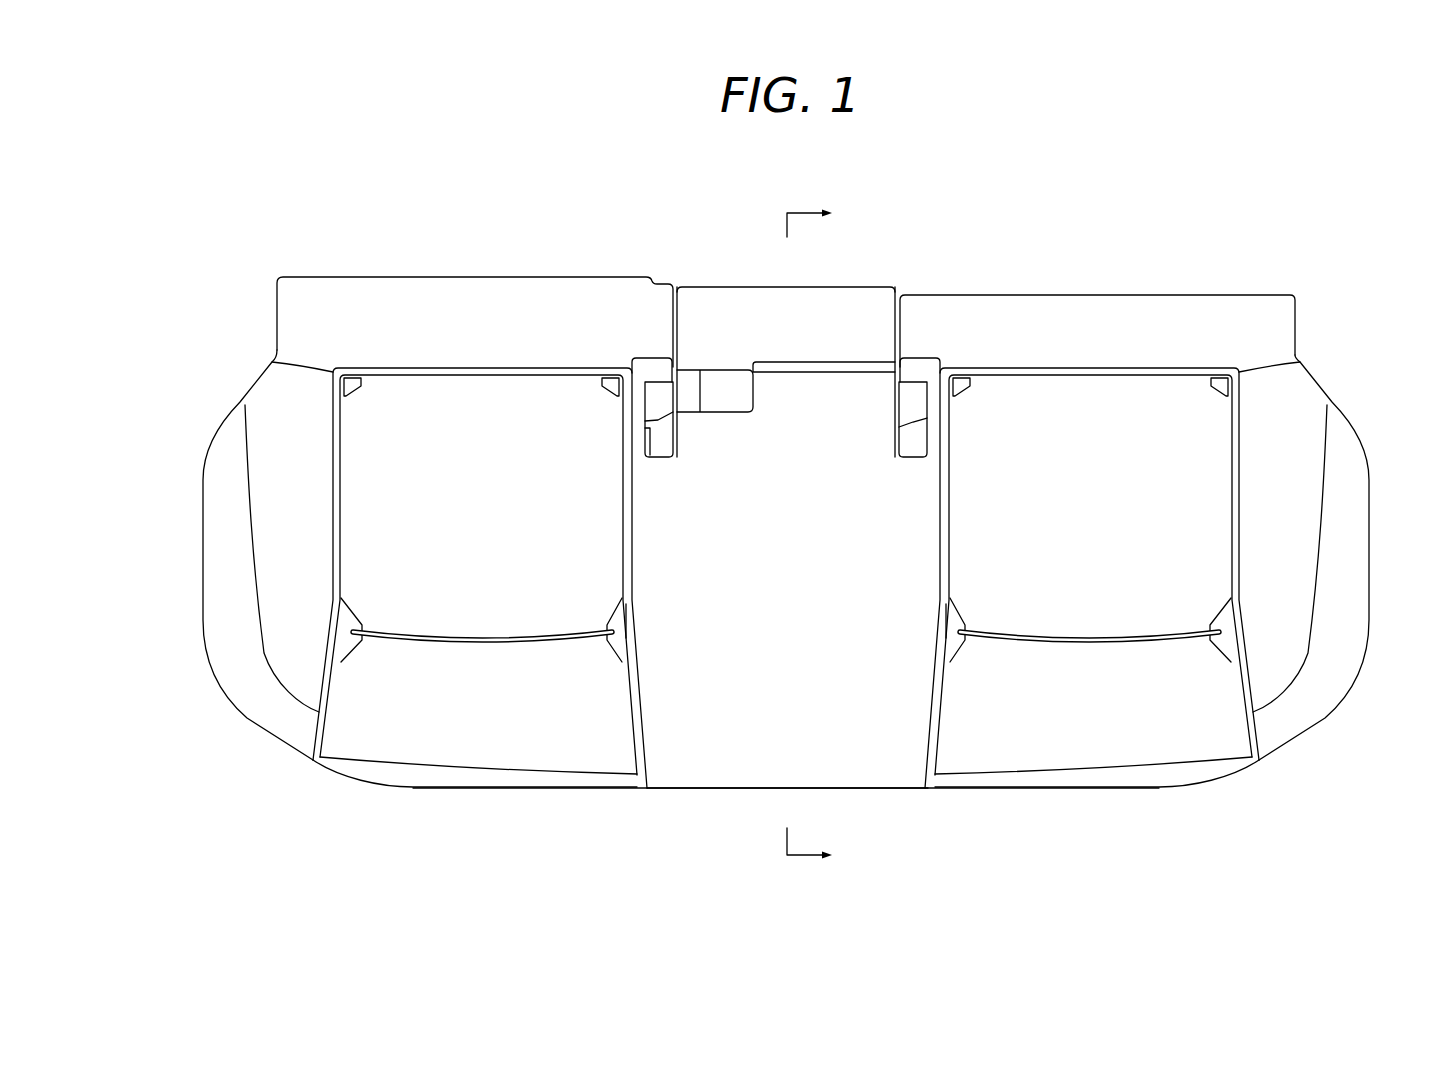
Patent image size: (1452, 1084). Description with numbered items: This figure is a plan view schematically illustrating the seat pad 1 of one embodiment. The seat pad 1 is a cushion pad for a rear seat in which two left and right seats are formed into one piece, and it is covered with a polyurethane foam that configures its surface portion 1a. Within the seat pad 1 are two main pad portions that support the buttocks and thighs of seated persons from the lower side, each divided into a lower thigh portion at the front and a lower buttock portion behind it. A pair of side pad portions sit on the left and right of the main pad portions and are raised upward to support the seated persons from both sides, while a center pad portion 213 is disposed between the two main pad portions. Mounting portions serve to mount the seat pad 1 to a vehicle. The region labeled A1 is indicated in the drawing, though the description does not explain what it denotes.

The seat pad 1 is at (222, 272).
The surface portion 1a is at (708, 763).
The center pad portion 213 is at (877, 762).
The area A1 (center box region) A1 is at (747, 397).